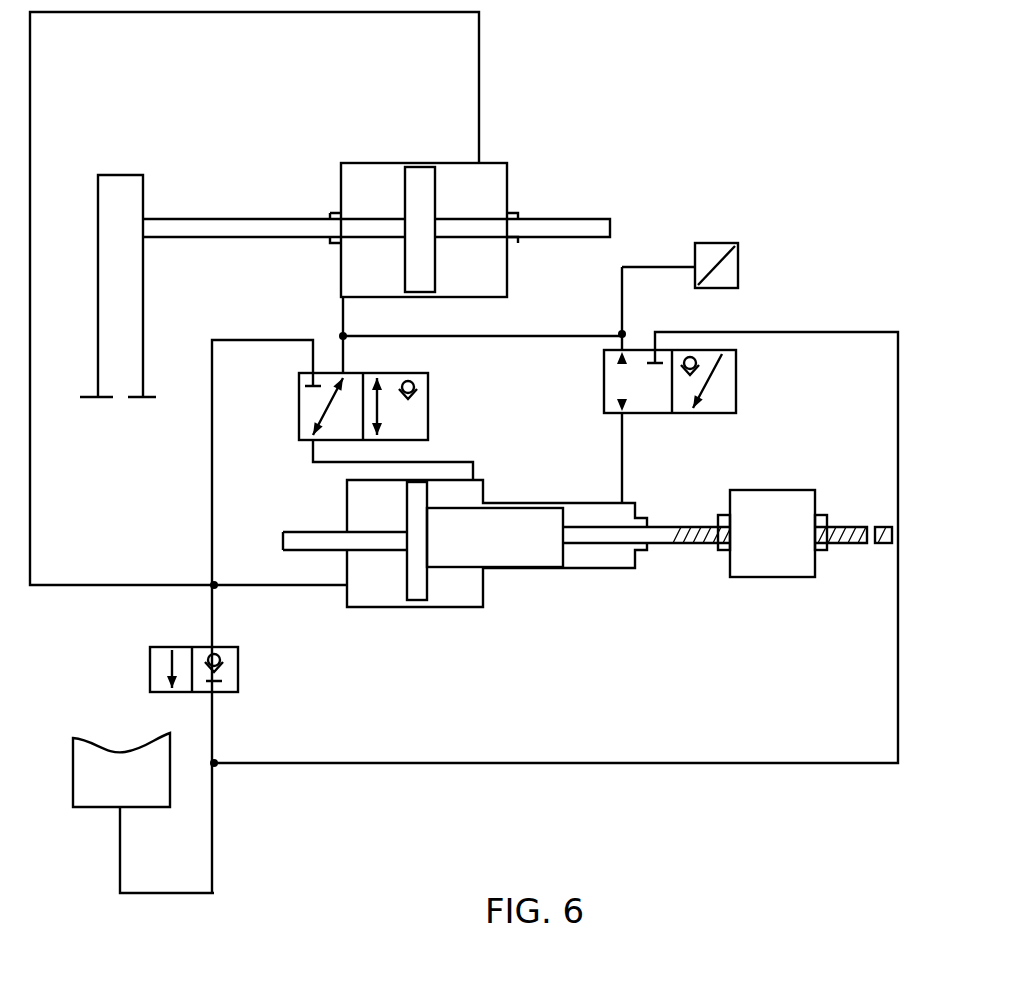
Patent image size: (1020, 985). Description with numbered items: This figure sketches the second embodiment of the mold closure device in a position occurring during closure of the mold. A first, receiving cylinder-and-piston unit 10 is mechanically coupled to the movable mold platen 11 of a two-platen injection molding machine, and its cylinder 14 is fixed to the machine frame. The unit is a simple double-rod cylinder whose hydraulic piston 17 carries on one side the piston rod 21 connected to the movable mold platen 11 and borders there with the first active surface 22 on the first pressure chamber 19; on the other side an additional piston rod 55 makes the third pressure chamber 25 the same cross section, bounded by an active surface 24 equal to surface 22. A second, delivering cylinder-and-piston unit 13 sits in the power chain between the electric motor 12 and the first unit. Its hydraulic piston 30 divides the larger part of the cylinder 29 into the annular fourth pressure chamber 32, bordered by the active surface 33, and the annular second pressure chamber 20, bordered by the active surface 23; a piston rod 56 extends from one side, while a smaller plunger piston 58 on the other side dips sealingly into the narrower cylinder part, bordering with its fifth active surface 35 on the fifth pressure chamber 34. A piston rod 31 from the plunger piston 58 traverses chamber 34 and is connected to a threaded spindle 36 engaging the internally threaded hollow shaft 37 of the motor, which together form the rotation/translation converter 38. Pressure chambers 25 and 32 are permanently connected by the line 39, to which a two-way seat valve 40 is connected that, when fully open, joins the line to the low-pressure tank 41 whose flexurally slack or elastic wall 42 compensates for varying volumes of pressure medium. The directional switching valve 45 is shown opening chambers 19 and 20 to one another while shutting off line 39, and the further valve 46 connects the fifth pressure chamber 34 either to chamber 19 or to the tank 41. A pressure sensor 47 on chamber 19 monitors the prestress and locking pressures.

The first, receiving cylinder-and-piston unit 10 is at (393, 173).
The movable mold platen 11 is at (112, 348).
The electric motor 12 is at (770, 522).
The second, delivering cylinder-and-piston unit 13 is at (582, 559).
The cylinder 14 is at (365, 163).
The hydraulic piston 17 is at (420, 182).
The first pressure chamber 19 is at (353, 193).
The second pressure chamber 20 is at (463, 593).
The piston rod 21 is at (198, 230).
The first active surface 22 is at (403, 262).
The active surface 23 is at (430, 487).
The third active surface 24 is at (437, 262).
The third pressure chamber 25 is at (488, 192).
The cylinder 29 is at (347, 600).
The hydraulic piston 30 is at (415, 590).
The piston rod 31 is at (665, 532).
The fourth pressure chamber 32 is at (367, 507).
The fourth active surface 33 is at (403, 570).
The fifth pressure chamber 34 is at (600, 560).
The fifth active surface 35 is at (572, 510).
The threaded spindle 36 is at (845, 520).
The hollow shaft 37 is at (822, 550).
The rotation/translation converter 38 is at (715, 555).
The line 39 is at (32, 90).
The 2/2-way seat valve 40 is at (148, 668).
The low-pressure tank 41 is at (170, 788).
The flexurally slack or elastic wall 42 is at (122, 753).
The directional switching valve 45 is at (299, 413).
The further directional switching valve 46 is at (737, 387).
The pressure sensor 47 is at (723, 240).
The additional piston rod 55 is at (580, 223).
The piston rod 56 is at (370, 543).
The plunger piston 58 is at (520, 552).